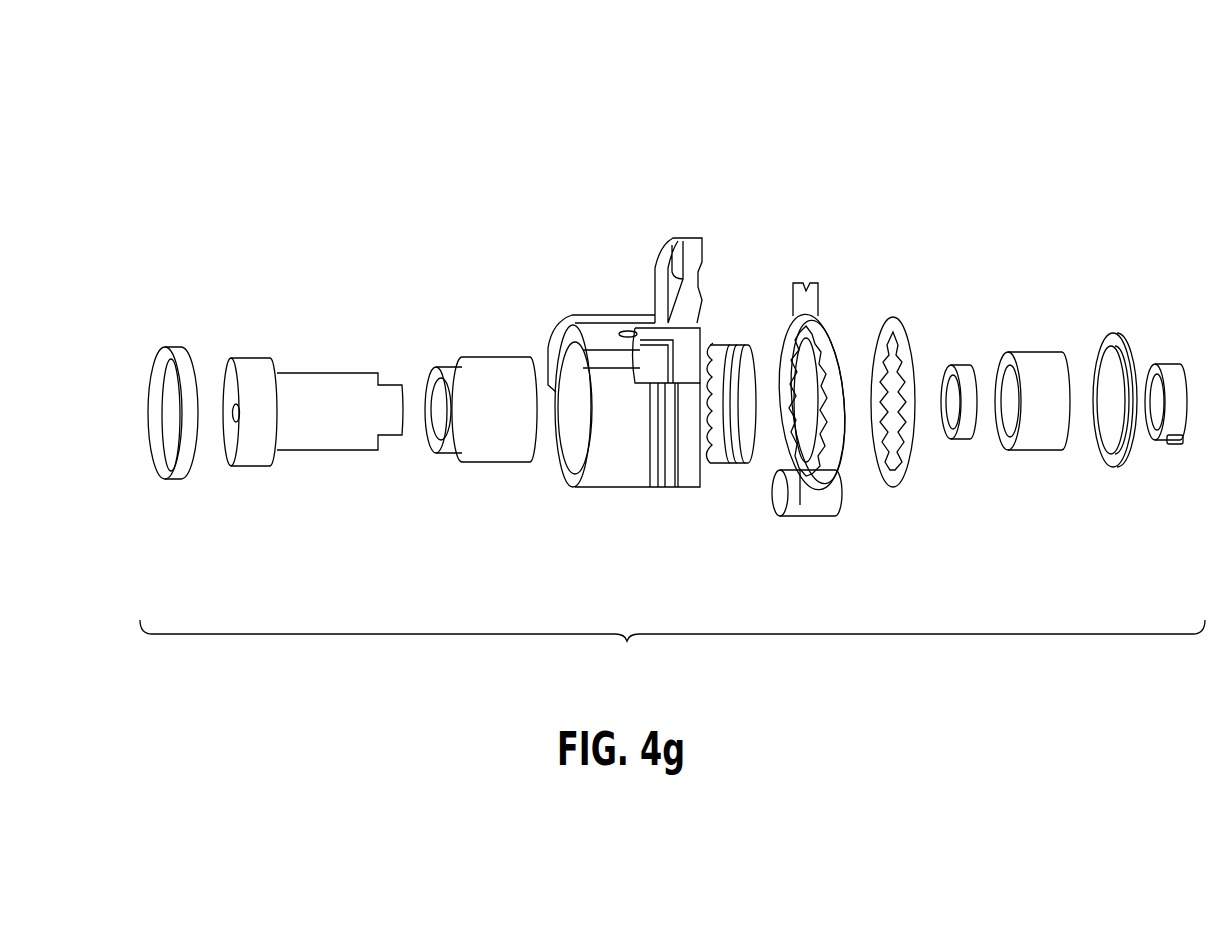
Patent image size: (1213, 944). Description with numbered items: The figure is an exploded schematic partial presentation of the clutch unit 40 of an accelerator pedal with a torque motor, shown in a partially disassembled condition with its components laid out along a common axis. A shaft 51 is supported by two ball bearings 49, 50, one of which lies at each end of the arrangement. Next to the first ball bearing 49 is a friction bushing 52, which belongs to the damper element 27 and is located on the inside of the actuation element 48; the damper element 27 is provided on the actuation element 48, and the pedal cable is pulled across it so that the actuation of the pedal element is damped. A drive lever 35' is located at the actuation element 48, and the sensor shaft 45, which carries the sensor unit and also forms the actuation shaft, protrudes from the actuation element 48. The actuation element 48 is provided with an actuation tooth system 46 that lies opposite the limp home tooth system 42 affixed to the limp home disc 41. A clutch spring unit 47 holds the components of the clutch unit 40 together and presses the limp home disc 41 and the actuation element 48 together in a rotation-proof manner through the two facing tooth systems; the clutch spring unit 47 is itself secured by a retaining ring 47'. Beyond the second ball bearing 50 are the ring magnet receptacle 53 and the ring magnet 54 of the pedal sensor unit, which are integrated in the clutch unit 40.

The clutch unit 40 is at (252, 128).
The ball bearing 49 is at (175, 352).
The shaft 51 is at (303, 385).
The friction bushing 52 is at (483, 365).
The actuation element 48 is at (595, 473).
The damper element 27 is at (657, 490).
The drive lever 35' is at (674, 243).
The sensor shaft 45 is at (722, 342).
The actuation tooth system 46 is at (706, 470).
The limp home disc 41 is at (818, 312).
The limp home tooth system 42 is at (826, 520).
The clutch spring unit 47 is at (893, 453).
The ball bearing 50 is at (960, 362).
The ring magnet receptacle 53 is at (1040, 350).
The retaining ring 47' is at (1112, 354).
The ring magnet 54 is at (1177, 447).